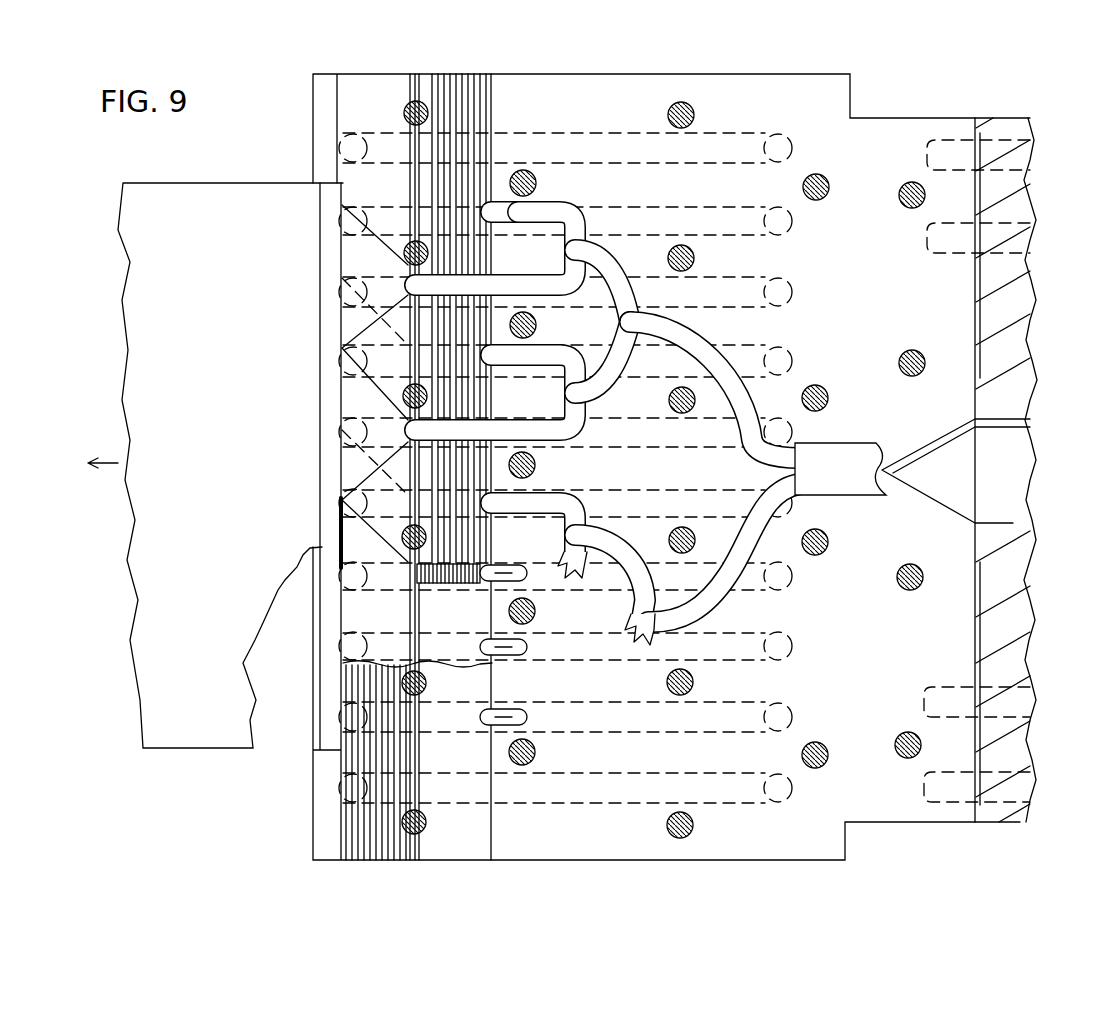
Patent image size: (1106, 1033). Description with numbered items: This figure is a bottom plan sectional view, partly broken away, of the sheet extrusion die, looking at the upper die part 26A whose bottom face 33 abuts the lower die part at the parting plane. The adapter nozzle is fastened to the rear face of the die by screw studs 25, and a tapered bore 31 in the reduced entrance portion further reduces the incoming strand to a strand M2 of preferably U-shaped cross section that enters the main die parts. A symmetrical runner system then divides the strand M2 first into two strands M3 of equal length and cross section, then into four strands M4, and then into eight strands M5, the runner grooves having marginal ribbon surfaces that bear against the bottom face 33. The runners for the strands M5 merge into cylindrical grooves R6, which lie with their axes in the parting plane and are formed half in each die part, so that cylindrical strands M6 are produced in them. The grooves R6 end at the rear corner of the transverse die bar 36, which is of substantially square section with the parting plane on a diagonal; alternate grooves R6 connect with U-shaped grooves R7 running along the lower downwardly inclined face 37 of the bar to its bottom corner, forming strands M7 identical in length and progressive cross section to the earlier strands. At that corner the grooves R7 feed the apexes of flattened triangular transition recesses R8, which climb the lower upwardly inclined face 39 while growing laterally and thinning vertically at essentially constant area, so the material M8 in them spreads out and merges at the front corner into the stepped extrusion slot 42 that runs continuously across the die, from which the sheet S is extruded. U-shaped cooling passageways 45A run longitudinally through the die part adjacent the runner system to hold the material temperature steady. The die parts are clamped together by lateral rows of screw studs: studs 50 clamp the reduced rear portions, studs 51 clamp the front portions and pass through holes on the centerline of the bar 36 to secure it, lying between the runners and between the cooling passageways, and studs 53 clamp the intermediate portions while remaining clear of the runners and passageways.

The transverse die bar 36 is at (460, 72).
The lower downwardly inclined face 37 is at (480, 108).
The screw studs 51 is at (406, 110).
The cooling passageway 45A is at (737, 133).
The screw studs 53 is at (818, 199).
The screw studs 50 is at (903, 207).
The screw studs 25 is at (1037, 237).
The cylindrical strands M6 is at (507, 202).
The strands M5 is at (550, 203).
The strands M4 is at (618, 262).
The strands M3 is at (730, 355).
The strand M2 is at (840, 450).
The strands M7 is at (472, 280).
The material M8 is at (350, 258).
The lower upwardly inclined face 39 is at (380, 335).
The tapered bore 31 is at (950, 450).
The U-shaped grooves R7 is at (470, 567).
The cylindrical grooves R6 is at (500, 575).
The triangular transition recesses R8 is at (400, 604).
The sheet S is at (140, 624).
The stepped extrusion slot 42 is at (338, 716).
The bottom face 33 is at (861, 659).
The upper die part 26A is at (530, 862).